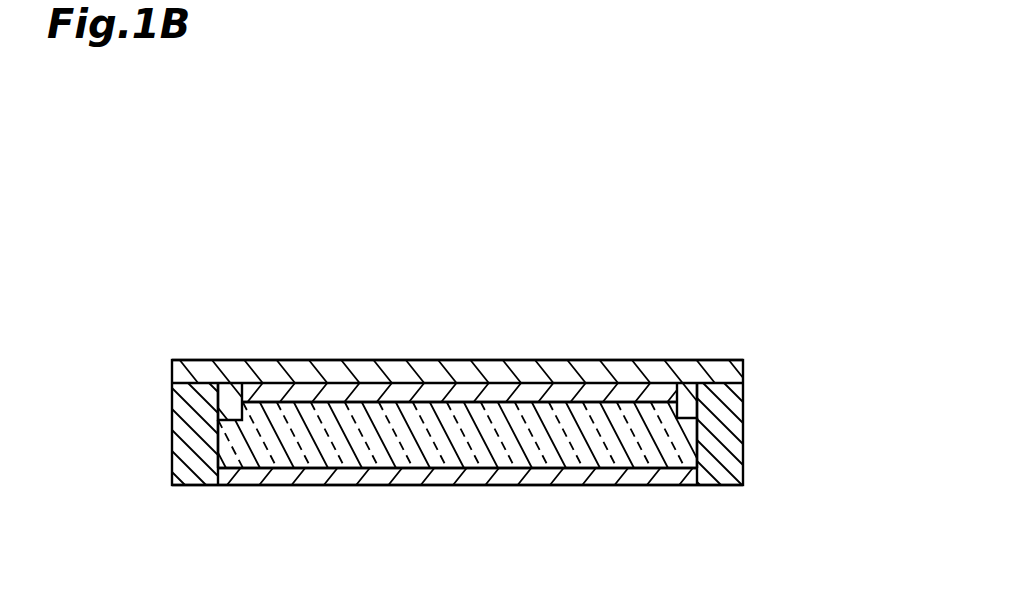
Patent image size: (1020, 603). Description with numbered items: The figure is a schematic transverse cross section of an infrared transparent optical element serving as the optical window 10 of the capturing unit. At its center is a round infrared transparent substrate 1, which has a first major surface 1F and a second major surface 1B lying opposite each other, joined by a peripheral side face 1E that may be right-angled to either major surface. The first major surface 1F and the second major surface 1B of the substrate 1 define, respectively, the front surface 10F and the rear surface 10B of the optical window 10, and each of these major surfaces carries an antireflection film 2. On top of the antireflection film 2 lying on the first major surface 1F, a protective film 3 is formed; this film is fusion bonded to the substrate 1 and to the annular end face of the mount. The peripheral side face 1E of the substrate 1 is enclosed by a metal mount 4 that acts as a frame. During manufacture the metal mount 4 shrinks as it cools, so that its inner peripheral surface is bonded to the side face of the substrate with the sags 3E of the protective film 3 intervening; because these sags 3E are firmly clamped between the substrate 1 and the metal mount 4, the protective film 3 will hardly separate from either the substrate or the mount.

The optical window 10 is at (601, 184).
The infrared transparent substrate 1 is at (365, 423).
The antireflection film 2 is at (566, 393).
The protective film 3 is at (462, 372).
The metal mount 4 is at (192, 437).
The peripheral side face 1E is at (226, 422).
The first major surface 1F is at (501, 393).
The second major surface 1B is at (498, 475).
The sags 3E is at (240, 402).
The front surface 10F is at (645, 360).
The rear surface 10B is at (625, 486).